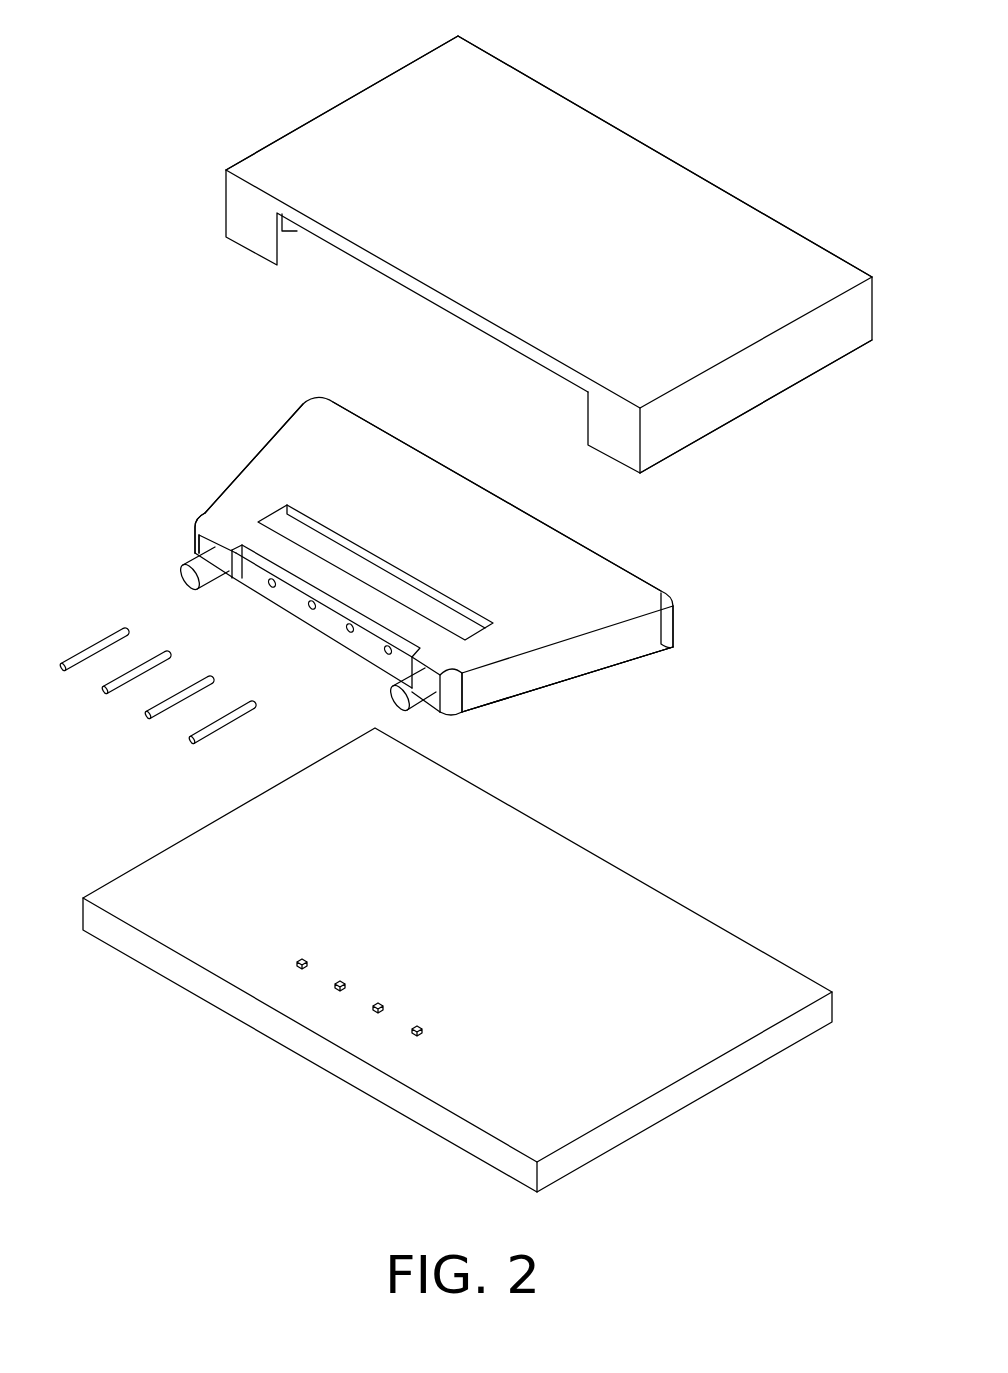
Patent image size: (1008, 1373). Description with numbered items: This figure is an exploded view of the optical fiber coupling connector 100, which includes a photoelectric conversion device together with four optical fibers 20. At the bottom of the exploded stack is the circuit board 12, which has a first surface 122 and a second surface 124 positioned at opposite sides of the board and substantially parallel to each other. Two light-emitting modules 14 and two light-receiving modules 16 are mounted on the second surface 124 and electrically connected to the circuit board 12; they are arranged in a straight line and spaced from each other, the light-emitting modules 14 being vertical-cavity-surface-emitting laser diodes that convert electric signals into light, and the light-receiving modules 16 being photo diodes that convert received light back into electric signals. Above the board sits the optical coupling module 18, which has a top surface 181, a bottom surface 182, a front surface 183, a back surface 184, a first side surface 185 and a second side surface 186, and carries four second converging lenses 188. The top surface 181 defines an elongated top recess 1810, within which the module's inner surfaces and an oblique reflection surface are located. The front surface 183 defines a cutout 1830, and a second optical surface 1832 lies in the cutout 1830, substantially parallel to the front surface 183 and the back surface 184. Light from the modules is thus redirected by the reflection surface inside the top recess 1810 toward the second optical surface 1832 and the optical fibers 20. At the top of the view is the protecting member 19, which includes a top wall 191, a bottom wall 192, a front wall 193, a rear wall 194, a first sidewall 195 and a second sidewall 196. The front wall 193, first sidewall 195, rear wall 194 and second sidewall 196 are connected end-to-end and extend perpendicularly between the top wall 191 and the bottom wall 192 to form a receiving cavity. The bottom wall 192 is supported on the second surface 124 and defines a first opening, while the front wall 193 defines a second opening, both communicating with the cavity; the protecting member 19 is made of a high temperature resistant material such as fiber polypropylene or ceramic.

The optical fiber coupling connector 100 is at (318, 38).
The circuit board 12 is at (612, 945).
The first surface 122 is at (675, 1116).
The second surface 124 is at (490, 845).
The light-emitting modules 14 is at (411, 1030).
The light-receiving modules 16 is at (335, 984).
The optical coupling module 18 is at (201, 466).
The top surface 181 is at (428, 515).
The top recess 1810 is at (256, 567).
The bottom surface 182 is at (637, 667).
The front surface 183 is at (197, 536).
The cutout 1830 is at (292, 607).
The second optical surface 1832 is at (250, 547).
The back surface 184 is at (626, 568).
The first side surface 185 is at (287, 420).
The second side surface 186 is at (540, 673).
The second converging lenses 188 is at (262, 585).
The protecting member 19 is at (298, 113).
The top wall 191 is at (543, 100).
The bottom wall 192 is at (704, 442).
The front wall 193 is at (253, 212).
The rear wall 194 is at (682, 158).
The first sidewall 195 is at (253, 150).
The second sidewall 196 is at (783, 357).
The optical fibers 20 is at (148, 717).